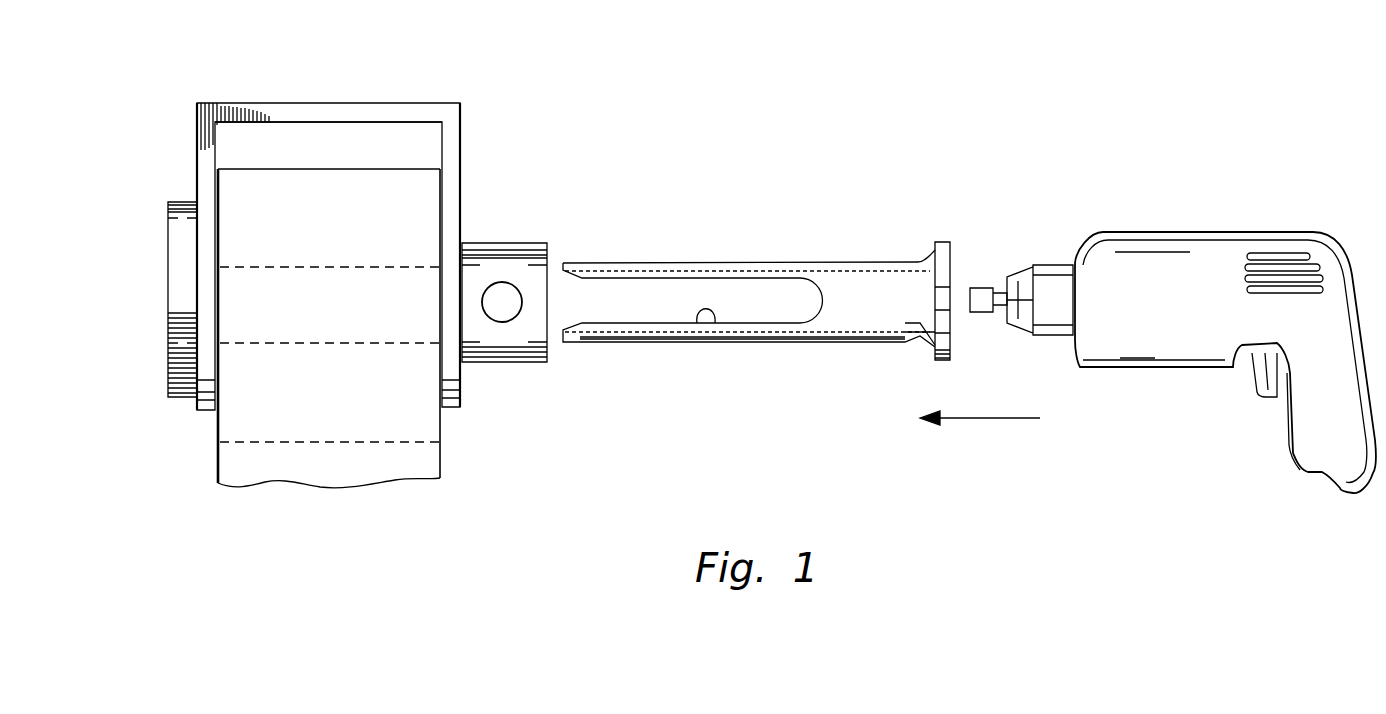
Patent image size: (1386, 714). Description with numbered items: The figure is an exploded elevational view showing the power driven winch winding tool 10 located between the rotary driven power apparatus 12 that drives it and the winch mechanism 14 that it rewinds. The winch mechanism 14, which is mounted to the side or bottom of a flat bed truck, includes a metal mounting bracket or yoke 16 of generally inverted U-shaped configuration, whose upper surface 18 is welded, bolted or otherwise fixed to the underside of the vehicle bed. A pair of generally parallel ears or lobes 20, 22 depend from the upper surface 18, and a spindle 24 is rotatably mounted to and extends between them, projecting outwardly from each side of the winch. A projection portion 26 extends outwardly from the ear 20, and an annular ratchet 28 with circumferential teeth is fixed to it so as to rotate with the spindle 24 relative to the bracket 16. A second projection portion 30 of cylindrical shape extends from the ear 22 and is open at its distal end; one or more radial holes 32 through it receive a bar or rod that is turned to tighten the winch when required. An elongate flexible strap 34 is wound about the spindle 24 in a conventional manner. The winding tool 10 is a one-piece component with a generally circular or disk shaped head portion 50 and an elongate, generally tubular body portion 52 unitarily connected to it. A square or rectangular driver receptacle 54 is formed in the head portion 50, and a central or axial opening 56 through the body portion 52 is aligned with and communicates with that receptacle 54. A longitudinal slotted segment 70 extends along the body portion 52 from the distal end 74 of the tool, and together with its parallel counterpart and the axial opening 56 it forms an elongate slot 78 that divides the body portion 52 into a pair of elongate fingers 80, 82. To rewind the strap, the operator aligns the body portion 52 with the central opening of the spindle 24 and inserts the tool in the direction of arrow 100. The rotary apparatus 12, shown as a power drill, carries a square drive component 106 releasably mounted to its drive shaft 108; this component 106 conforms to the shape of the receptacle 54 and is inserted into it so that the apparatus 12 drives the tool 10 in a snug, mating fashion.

The power driven winch winding tool 10 is at (772, 262).
The rotary driven power apparatus 12 is at (1200, 200).
The winch mechanism 14 is at (349, 263).
The mounting bracket or yoke 16 is at (197, 153).
The upper surface 18 is at (292, 102).
The ear or lobe 20 is at (197, 183).
The ear or lobe 22 is at (462, 225).
The spindle 24 is at (312, 328).
The projection portion 26 is at (185, 268).
The annular ratchet 28 is at (167, 383).
The second projection portion 30 is at (513, 323).
The radial holes 32 is at (502, 282).
The elongate flexible strap 34 is at (442, 458).
The head portion 50 is at (950, 242).
The body portion 52 is at (832, 343).
The driver receptacle 54 is at (955, 310).
The central or axial opening 56 is at (878, 267).
The longitudinal slotted segment 70 is at (703, 323).
The distal end 74 is at (558, 343).
The elongate slot 78 is at (630, 293).
The elongate finger 80 is at (780, 262).
The elongate finger 82 is at (773, 343).
The arrow 100 is at (975, 420).
The square drive component 106 is at (977, 312).
The drive shaft 108 is at (1000, 287).